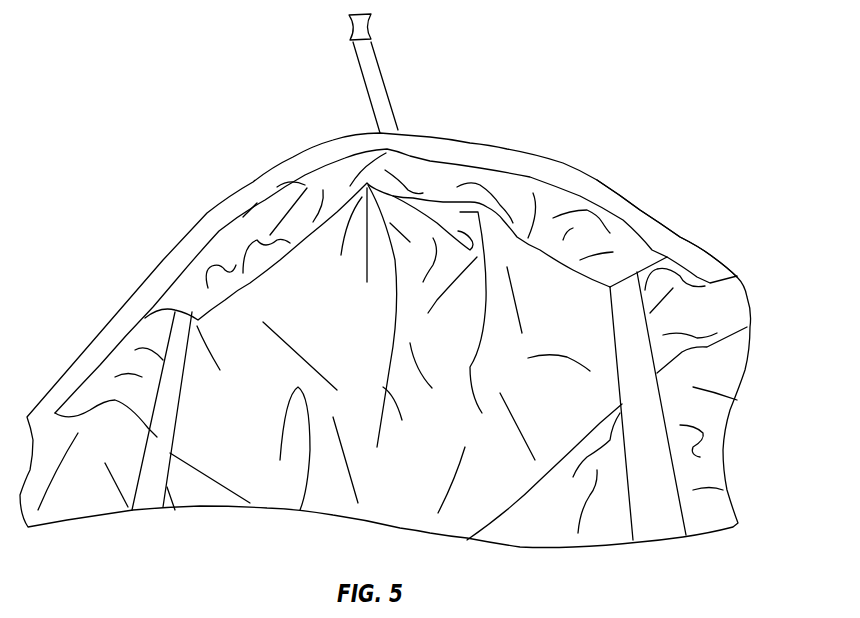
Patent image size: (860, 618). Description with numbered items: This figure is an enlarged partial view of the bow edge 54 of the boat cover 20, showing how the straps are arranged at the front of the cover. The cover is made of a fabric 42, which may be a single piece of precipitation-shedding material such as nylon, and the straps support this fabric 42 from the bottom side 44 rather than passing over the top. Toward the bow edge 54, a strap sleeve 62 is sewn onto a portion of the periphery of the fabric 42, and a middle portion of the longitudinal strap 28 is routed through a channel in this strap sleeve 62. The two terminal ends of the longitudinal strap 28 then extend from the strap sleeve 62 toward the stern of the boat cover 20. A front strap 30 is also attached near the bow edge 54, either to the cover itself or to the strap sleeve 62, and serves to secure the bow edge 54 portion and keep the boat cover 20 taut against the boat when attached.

The boat cover 20 is at (740, 233).
The longitudinal strap 28 is at (165, 420).
The front strap 30 is at (360, 68).
The fabric 42 is at (680, 180).
The bottom side 44 is at (310, 313).
The bow edge 54 is at (471, 141).
The strap sleeve 62 is at (567, 204).